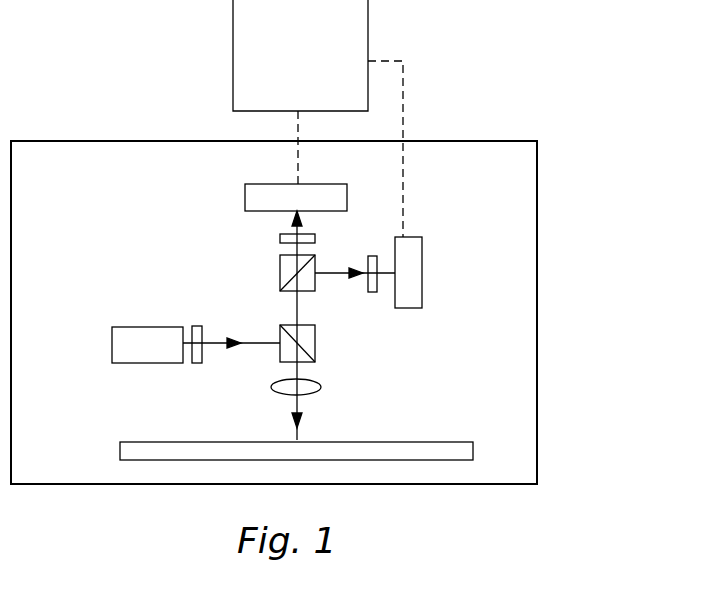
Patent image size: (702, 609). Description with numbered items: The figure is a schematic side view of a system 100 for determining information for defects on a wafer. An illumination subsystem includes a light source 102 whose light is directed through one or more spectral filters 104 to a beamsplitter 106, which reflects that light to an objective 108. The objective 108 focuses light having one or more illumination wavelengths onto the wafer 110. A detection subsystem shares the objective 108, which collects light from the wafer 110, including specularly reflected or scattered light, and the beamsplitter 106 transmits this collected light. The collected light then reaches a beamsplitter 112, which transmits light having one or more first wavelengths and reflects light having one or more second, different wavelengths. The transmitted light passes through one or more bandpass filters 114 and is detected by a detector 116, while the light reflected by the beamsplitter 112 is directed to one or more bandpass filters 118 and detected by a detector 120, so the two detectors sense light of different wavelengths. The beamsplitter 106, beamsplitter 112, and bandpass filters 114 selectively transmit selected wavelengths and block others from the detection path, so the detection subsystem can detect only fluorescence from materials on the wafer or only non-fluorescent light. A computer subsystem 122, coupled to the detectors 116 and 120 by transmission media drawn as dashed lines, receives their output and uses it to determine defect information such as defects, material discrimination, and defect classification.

The system 100 is at (306, 312).
The light source 102 is at (114, 340).
The spectral filter 104 is at (162, 331).
The beamsplitter 106 is at (334, 347).
The objective 108 is at (330, 394).
The wafer 110 is at (268, 438).
The beamsplitter 112 is at (264, 269).
The bandpass filter 114 is at (254, 227).
The detector 116 is at (261, 194).
The bandpass filter 118 is at (341, 289).
The detector 120 is at (440, 268).
The computer subsystem 122 is at (282, 90).